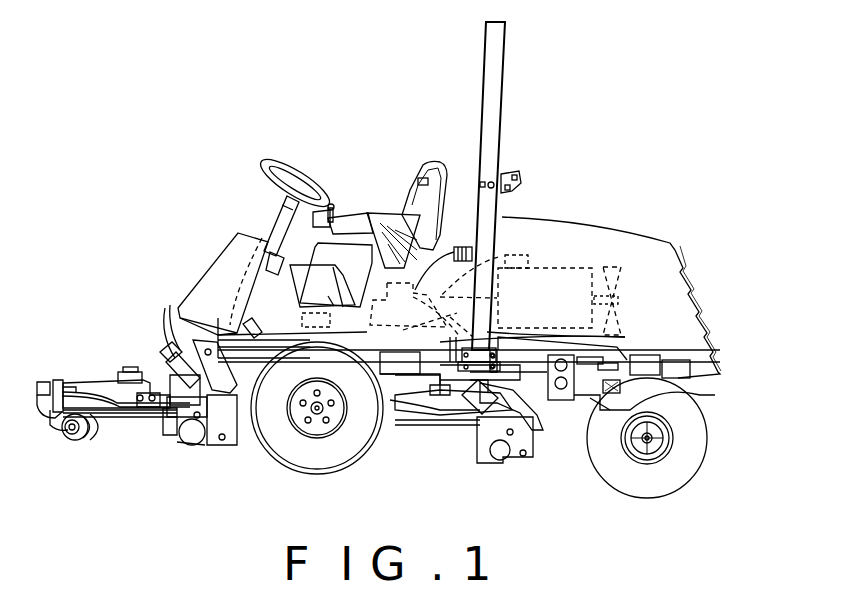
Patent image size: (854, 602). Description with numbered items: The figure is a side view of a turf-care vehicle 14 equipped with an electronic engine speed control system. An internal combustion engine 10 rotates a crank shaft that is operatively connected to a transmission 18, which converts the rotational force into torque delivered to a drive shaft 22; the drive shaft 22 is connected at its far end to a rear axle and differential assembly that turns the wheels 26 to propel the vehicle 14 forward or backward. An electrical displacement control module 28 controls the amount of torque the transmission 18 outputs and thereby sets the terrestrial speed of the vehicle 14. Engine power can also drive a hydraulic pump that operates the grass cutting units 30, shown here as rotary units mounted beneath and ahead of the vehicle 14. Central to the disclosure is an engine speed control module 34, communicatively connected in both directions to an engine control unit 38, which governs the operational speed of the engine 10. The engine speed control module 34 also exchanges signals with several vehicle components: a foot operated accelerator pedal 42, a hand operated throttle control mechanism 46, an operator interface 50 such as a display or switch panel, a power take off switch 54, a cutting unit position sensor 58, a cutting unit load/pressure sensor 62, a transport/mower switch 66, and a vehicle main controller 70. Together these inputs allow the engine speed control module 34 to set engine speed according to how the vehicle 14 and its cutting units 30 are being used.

The internal combustion engine 10 is at (557, 292).
The turf-care vehicle 14 is at (533, 100).
The transmission 18 is at (460, 310).
The drive shaft 22 is at (423, 367).
The wheels 26 is at (300, 453).
The electrical displacement control module 28 is at (622, 338).
The grass cutting unit 30 is at (108, 390).
The engine speed control module 34 is at (407, 303).
The engine control unit 38 is at (525, 254).
The foot operated accelerator pedal 42 is at (260, 326).
The hand operated throttle control mechanism 46 is at (320, 214).
The operator interface 50 is at (347, 223).
The power take off switch 54 is at (283, 255).
The cutting unit position sensor 58 is at (180, 348).
The cutting unit load/pressure sensor 62 is at (130, 368).
The transport/mower switch 66 is at (262, 230).
The vehicle main controller 70 is at (310, 317).